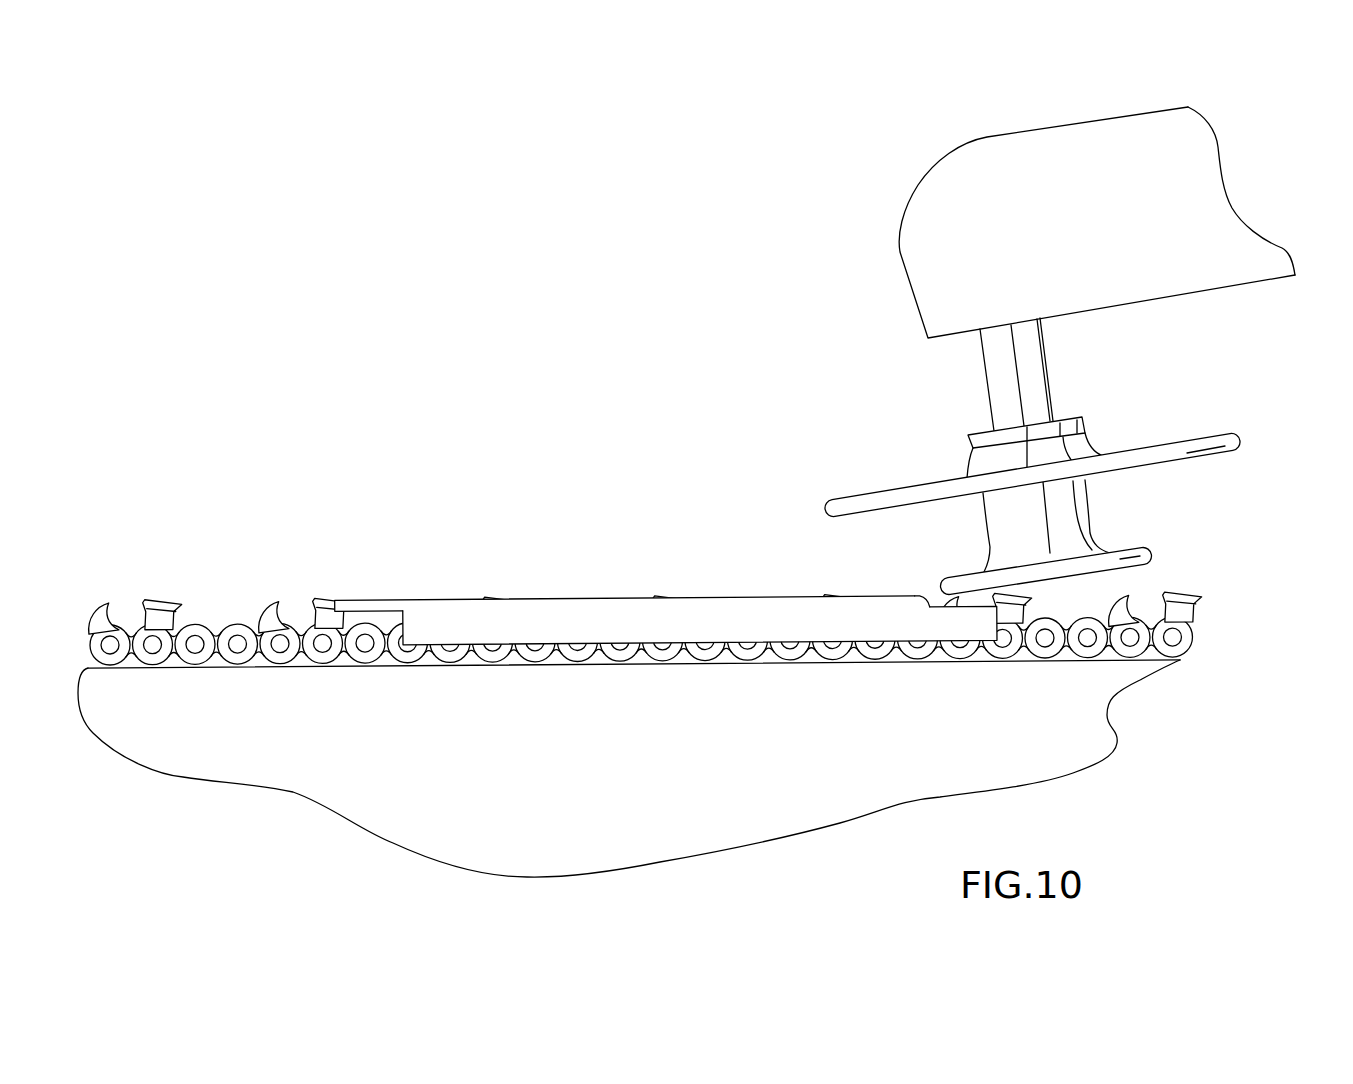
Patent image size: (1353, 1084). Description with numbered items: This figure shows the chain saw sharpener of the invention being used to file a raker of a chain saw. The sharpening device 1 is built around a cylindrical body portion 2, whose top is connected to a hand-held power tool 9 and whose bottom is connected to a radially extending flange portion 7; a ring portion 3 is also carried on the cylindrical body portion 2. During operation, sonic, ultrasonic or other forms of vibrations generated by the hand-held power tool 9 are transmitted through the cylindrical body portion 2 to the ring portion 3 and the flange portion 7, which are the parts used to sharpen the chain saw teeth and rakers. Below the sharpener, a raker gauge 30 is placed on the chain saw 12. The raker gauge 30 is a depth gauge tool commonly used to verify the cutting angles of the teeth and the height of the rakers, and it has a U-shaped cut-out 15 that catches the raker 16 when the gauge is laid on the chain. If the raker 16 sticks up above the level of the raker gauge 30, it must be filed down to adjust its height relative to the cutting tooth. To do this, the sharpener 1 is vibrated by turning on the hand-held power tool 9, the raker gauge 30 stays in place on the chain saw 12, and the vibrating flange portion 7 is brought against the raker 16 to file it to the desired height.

The sharpening device 1 is at (891, 166).
The hand-held power tool 9 is at (1234, 134).
The cylindrical body portion 2 is at (1072, 395).
The ring portion 3 is at (1262, 425).
The radially extending flange portion 7 is at (1171, 537).
The chain saw 12 is at (92, 582).
The U-shaped cut-out 15 is at (916, 628).
The raker 16 is at (927, 589).
The raker gauge 30 is at (564, 574).